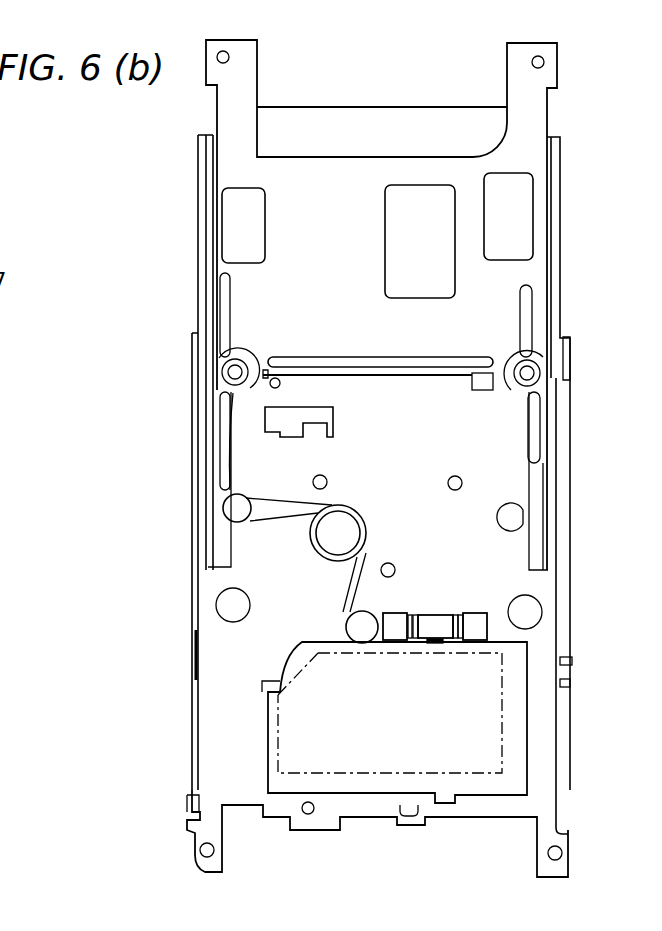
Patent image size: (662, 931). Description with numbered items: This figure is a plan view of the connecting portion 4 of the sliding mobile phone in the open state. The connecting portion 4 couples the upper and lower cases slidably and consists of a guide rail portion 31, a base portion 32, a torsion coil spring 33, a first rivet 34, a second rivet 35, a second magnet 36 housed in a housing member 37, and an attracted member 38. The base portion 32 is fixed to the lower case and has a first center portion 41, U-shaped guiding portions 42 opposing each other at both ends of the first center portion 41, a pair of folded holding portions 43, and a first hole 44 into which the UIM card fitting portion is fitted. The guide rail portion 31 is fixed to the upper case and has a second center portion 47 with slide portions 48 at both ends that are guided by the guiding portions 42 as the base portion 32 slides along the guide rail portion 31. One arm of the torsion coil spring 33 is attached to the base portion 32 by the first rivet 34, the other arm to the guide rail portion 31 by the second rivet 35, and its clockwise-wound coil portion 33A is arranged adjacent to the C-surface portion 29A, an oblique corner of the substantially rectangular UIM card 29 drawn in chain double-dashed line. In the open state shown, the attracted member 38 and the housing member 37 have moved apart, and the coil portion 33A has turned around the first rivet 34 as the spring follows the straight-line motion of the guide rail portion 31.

The connecting portion 4 is at (166, 286).
The UIM card 29 is at (328, 763).
The C-surface portion 29A is at (263, 673).
The guide rail portion 31 is at (223, 118).
The base portion 32 is at (187, 820).
The torsion coil spring 33 is at (310, 538).
The coil portion 33A is at (318, 555).
The first rivet 34 is at (347, 623).
The second rivet 35 is at (222, 506).
The second magnet 36 is at (437, 613).
The housing member 37 is at (483, 616).
The attracted member 38 is at (545, 357).
The first center portion 41 is at (473, 503).
The guiding portion 42 is at (563, 631).
The holding portions 43 is at (487, 628).
The first hole 44 is at (518, 738).
The second center portion 47 is at (483, 280).
The slide portion 48 is at (553, 178).